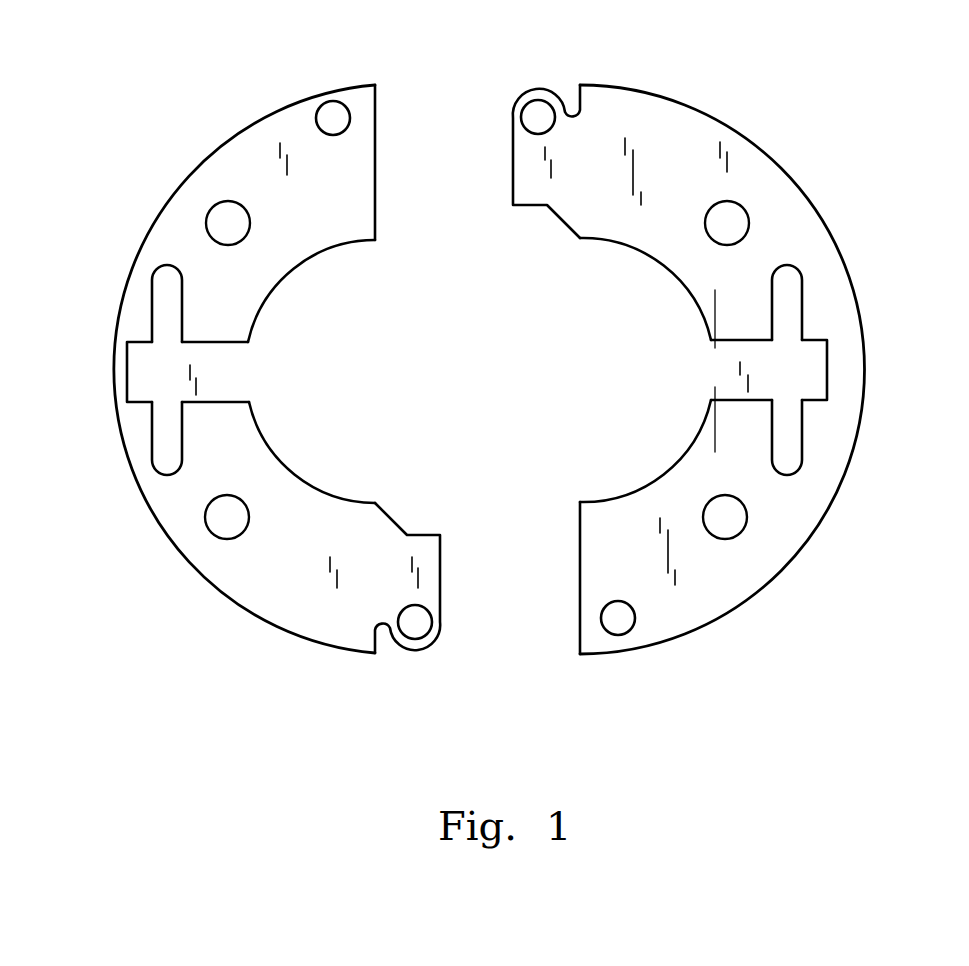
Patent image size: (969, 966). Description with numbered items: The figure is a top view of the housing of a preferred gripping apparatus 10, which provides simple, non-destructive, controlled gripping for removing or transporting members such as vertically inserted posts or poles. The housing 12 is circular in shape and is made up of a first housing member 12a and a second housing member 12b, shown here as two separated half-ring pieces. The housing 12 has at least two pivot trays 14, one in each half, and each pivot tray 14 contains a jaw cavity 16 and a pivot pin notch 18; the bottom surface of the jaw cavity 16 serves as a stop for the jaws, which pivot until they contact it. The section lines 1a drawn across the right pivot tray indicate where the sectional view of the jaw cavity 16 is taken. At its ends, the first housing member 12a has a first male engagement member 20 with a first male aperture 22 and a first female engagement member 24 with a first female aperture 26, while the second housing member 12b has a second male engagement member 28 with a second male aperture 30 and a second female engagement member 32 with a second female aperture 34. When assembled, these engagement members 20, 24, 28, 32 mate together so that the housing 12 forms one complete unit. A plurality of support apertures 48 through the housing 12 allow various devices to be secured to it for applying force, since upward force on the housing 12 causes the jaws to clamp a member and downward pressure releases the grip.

The gripping apparatus 10 is at (793, 83).
The housing 12 is at (588, 675).
The first housing member 12a is at (304, 373).
The second housing member 12b is at (621, 375).
The pivot tray 14 is at (130, 268).
The jaw cavity 16 is at (148, 368).
The pivot pin notch 18 is at (158, 285).
The first male engagement member 20 is at (443, 625).
The first male aperture 22 is at (401, 636).
The first female engagement member 24 is at (377, 127).
The first female aperture 26 is at (323, 96).
The second male engagement member 28 is at (547, 97).
The second male aperture 30 is at (521, 119).
The second female engagement member 32 is at (577, 617).
The second female aperture 34 is at (622, 636).
The support apertures 48 is at (203, 223).
The section line 1a is at (727, 310).